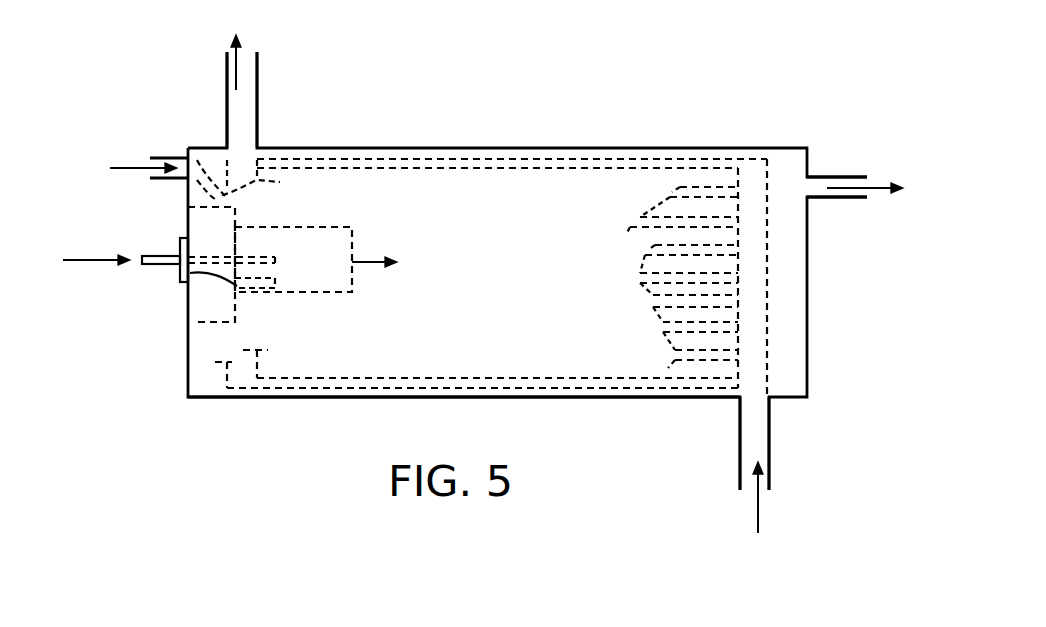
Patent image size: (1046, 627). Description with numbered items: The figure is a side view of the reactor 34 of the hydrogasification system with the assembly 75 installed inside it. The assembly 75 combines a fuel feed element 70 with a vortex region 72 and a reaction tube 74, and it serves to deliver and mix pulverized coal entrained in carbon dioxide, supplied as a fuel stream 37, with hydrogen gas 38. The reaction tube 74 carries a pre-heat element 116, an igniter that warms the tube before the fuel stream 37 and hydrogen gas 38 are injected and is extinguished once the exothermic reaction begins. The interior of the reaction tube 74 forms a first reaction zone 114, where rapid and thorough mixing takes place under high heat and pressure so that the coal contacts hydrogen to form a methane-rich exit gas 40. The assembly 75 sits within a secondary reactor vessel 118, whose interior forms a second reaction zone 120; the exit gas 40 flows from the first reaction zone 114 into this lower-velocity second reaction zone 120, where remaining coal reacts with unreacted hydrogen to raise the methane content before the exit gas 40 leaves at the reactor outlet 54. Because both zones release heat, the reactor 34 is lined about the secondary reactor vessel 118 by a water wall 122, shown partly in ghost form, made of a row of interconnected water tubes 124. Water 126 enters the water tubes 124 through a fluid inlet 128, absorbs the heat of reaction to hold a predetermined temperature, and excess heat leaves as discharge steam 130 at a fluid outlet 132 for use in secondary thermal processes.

The reactor 34 is at (235, 535).
The fuel stream 37 is at (85, 257).
The hydrogen gas 38 is at (125, 168).
The exit gas 40 is at (870, 195).
The reactor outlet 54 is at (815, 178).
The fuel feed element 70 is at (162, 258).
The vortex region 72 is at (210, 325).
The reaction tube 74 is at (312, 226).
The assembly 75 is at (190, 273).
The first reaction zone 114 is at (318, 282).
The pre-heat element 116 is at (258, 292).
The secondary reactor vessel 118 is at (558, 398).
The second reaction zone 120 is at (578, 283).
The water wall 122 is at (528, 157).
The water tubes 124 is at (698, 190).
The water 126 is at (757, 512).
The fluid inlet 128 is at (772, 413).
The discharge steam 130 is at (228, 66).
The fluid outlet 132 is at (257, 135).